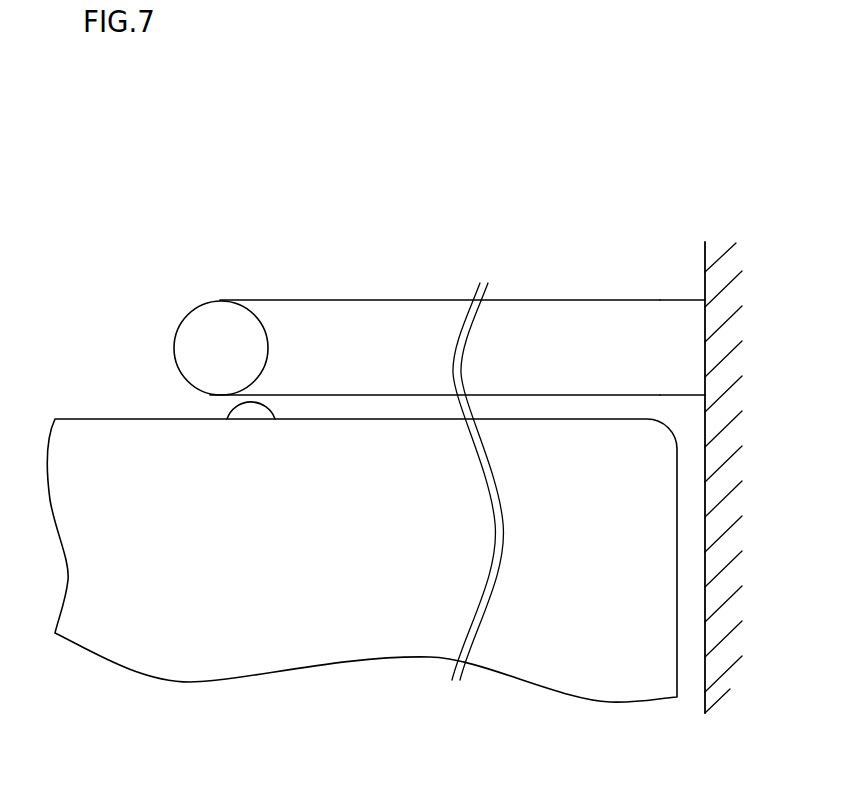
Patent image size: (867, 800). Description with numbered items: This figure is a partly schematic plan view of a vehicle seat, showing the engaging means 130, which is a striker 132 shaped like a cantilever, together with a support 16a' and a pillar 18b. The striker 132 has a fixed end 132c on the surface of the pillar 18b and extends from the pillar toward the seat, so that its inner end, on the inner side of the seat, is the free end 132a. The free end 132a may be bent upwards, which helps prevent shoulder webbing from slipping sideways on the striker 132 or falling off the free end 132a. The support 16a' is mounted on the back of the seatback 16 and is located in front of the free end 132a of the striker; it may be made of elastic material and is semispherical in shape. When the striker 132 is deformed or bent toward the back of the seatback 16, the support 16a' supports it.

The seatback 16 is at (600, 680).
The support 16a' is at (168, 382).
The pillar 18b is at (736, 262).
The engaging means 130 is at (530, 250).
The striker 132 is at (376, 310).
The free end 132a is at (219, 322).
The fixed end 132c is at (705, 352).